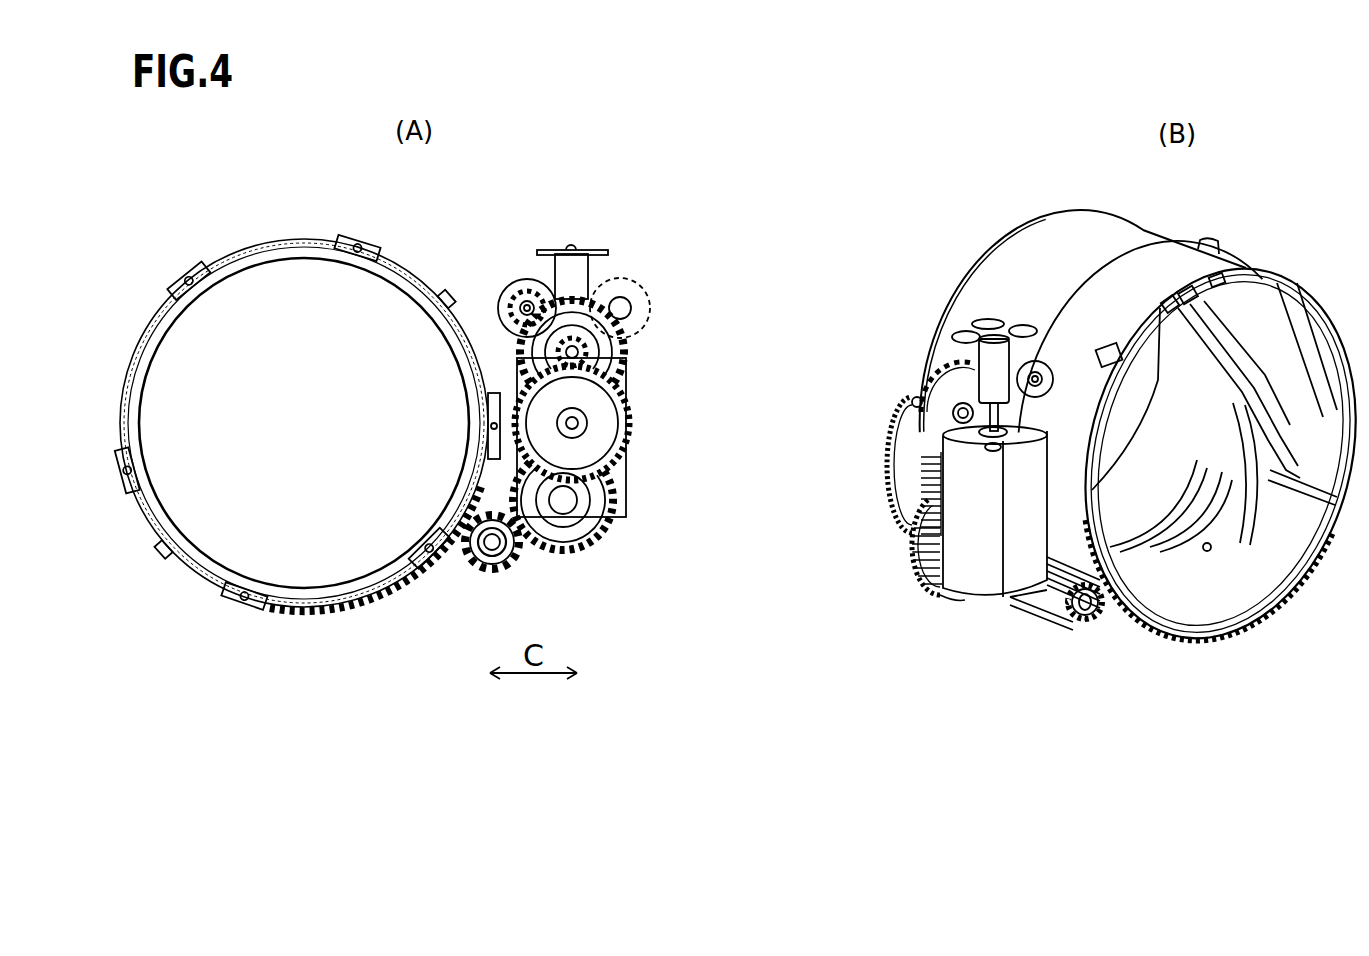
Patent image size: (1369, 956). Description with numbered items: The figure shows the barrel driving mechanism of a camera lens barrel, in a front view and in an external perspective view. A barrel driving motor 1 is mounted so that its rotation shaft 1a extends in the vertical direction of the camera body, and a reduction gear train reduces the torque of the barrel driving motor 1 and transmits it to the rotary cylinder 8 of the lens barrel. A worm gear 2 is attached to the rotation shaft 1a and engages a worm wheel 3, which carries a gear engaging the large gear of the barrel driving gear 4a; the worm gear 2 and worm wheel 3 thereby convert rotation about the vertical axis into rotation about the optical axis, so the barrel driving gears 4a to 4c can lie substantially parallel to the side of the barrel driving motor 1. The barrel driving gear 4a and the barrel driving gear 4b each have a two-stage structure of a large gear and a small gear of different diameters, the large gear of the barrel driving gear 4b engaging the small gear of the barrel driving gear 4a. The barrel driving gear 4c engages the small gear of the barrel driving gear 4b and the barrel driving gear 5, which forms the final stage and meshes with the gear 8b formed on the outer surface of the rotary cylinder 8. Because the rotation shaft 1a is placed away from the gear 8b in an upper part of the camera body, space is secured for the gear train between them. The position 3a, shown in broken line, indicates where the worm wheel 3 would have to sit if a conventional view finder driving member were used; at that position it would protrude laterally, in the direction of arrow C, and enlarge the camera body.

The barrel driving motor 1 is at (618, 468).
The rotation shaft 1a is at (952, 413).
The worm gear 2 is at (580, 274).
The worm wheel 3 is at (507, 287).
The position of worm wheel 3a is at (632, 307).
The barrel driving gear 4a is at (608, 352).
The barrel driving gear 4b is at (612, 423).
The barrel driving gear 4c is at (598, 518).
The barrel driving gear 5 is at (507, 558).
The rotary cylinder 8 is at (297, 597).
The gear 8b is at (380, 599).